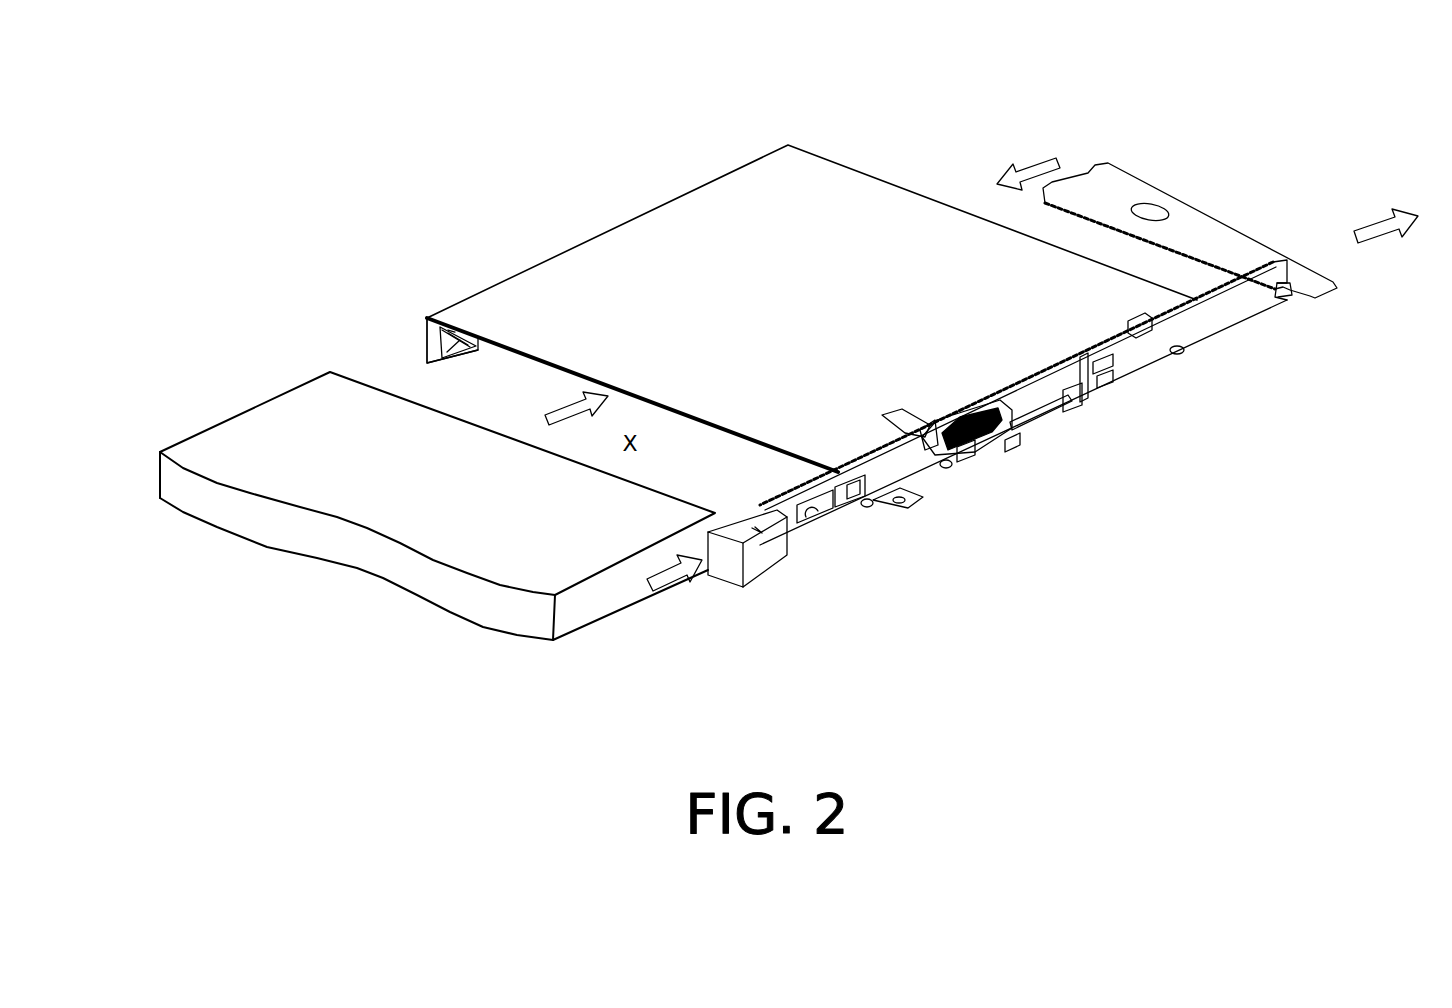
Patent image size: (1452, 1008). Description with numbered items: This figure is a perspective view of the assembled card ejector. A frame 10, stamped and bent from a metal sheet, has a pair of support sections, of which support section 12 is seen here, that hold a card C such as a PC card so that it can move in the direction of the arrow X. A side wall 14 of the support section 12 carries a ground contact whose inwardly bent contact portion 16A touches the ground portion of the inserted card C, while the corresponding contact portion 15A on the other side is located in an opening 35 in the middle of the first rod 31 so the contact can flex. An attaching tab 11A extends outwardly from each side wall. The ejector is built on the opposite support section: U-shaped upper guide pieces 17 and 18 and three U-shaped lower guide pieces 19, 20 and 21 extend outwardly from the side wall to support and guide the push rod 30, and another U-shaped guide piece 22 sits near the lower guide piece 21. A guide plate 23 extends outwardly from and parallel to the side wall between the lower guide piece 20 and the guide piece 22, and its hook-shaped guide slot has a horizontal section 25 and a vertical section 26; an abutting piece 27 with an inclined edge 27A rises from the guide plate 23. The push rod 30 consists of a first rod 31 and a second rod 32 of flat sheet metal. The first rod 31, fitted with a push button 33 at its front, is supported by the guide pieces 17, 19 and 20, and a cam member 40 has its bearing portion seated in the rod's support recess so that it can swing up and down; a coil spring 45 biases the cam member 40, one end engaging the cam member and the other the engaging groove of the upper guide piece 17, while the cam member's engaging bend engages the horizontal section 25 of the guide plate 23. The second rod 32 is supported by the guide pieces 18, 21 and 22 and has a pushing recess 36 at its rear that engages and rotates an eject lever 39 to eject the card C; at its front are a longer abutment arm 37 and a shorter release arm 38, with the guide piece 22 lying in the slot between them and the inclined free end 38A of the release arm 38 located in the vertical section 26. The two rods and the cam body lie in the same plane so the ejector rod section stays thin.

The card C is at (362, 410).
The frame 10 is at (873, 233).
The attaching tab 11A is at (905, 515).
The support section 12 is at (442, 356).
The side wall 14 is at (427, 343).
The contact portion 15A is at (855, 482).
The contact portion 16A is at (462, 350).
The upper guide piece 17 is at (912, 418).
The upper guide piece 18 is at (1130, 322).
The lower guide piece 19 is at (866, 508).
The lower guide piece 20 is at (948, 468).
The lower guide piece 21 is at (1182, 352).
The guide piece 22 is at (1105, 380).
The guide plate 23 is at (985, 445).
The horizontal section 25 is at (1008, 450).
The vertical section 26 is at (1015, 430).
The abutting piece 27 is at (978, 402).
The inclined edge 27A is at (1000, 405).
The push rod 30 is at (1240, 530).
The first rod 31 is at (928, 470).
The second rod 32 is at (1153, 350).
The push button 33 is at (730, 585).
The opening 35 is at (820, 522).
The pushing recess 36 is at (1288, 298).
The abutment arm 37 is at (1082, 398).
The release arm 38 is at (1092, 378).
The inclined free end 38A is at (1068, 412).
The eject lever 39 is at (1240, 233).
The cam member 40 is at (985, 395).
The coil spring 45 is at (950, 407).